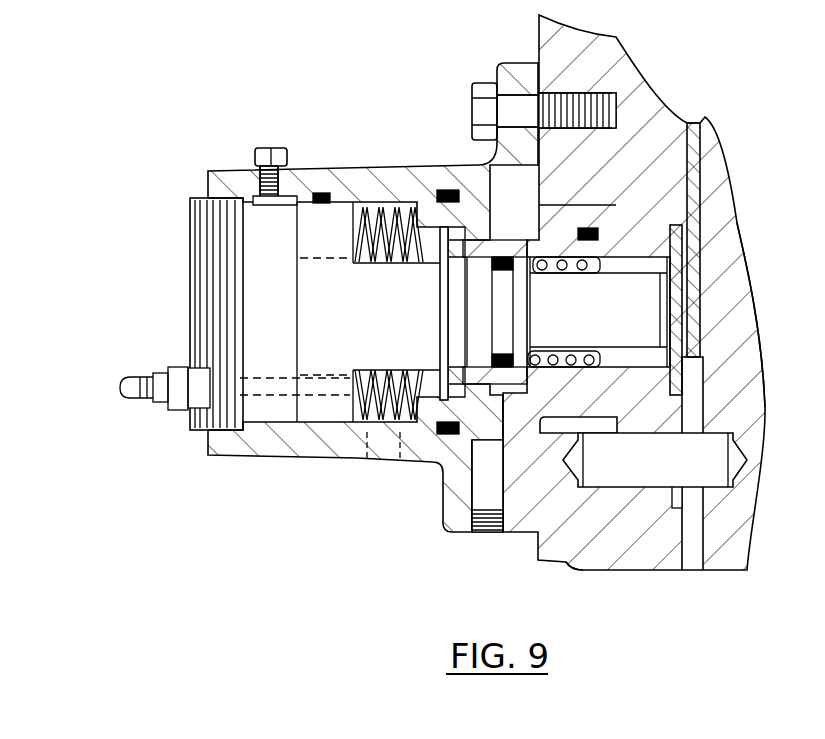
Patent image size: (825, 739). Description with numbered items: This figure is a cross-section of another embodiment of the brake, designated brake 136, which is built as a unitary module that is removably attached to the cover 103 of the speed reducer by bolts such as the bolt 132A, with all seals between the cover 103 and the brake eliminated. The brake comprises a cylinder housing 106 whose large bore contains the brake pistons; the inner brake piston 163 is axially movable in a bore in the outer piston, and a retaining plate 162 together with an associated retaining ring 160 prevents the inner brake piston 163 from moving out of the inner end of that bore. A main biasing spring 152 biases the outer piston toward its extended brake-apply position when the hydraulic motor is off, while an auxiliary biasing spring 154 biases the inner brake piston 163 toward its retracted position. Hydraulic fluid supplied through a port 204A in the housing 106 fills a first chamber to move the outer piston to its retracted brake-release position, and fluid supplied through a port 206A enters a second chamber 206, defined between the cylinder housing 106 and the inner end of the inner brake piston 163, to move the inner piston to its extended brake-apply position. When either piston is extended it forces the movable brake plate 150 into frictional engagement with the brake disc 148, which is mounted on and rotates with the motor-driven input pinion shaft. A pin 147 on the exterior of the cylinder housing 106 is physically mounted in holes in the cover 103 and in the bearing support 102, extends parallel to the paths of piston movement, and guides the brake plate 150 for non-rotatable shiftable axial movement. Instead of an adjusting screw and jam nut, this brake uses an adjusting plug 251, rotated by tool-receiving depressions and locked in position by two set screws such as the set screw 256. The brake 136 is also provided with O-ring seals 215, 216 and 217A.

The bearing support 102 is at (745, 537).
The cover 103 is at (582, 575).
The cylinder housing 106 is at (335, 165).
The bolt 132A is at (478, 90).
The brake 136 is at (232, 437).
The pin 147 is at (723, 466).
The brake disc 148 is at (690, 135).
The brake plate 150 is at (760, 394).
The main biasing spring 152 is at (393, 203).
The auxiliary biasing spring 154 is at (623, 257).
The retaining ring 160 is at (440, 397).
The retaining plate 162 is at (456, 228).
The inner brake piston 163 is at (614, 318).
The port 204A is at (475, 533).
The second chamber 206 is at (380, 205).
The port 206A is at (375, 458).
The O-ring seal 215 is at (322, 193).
The O-ring seal 216 is at (446, 190).
The O-ring seal 217A is at (592, 226).
The adjusting plug 251 is at (205, 275).
The set screw 256 is at (258, 148).